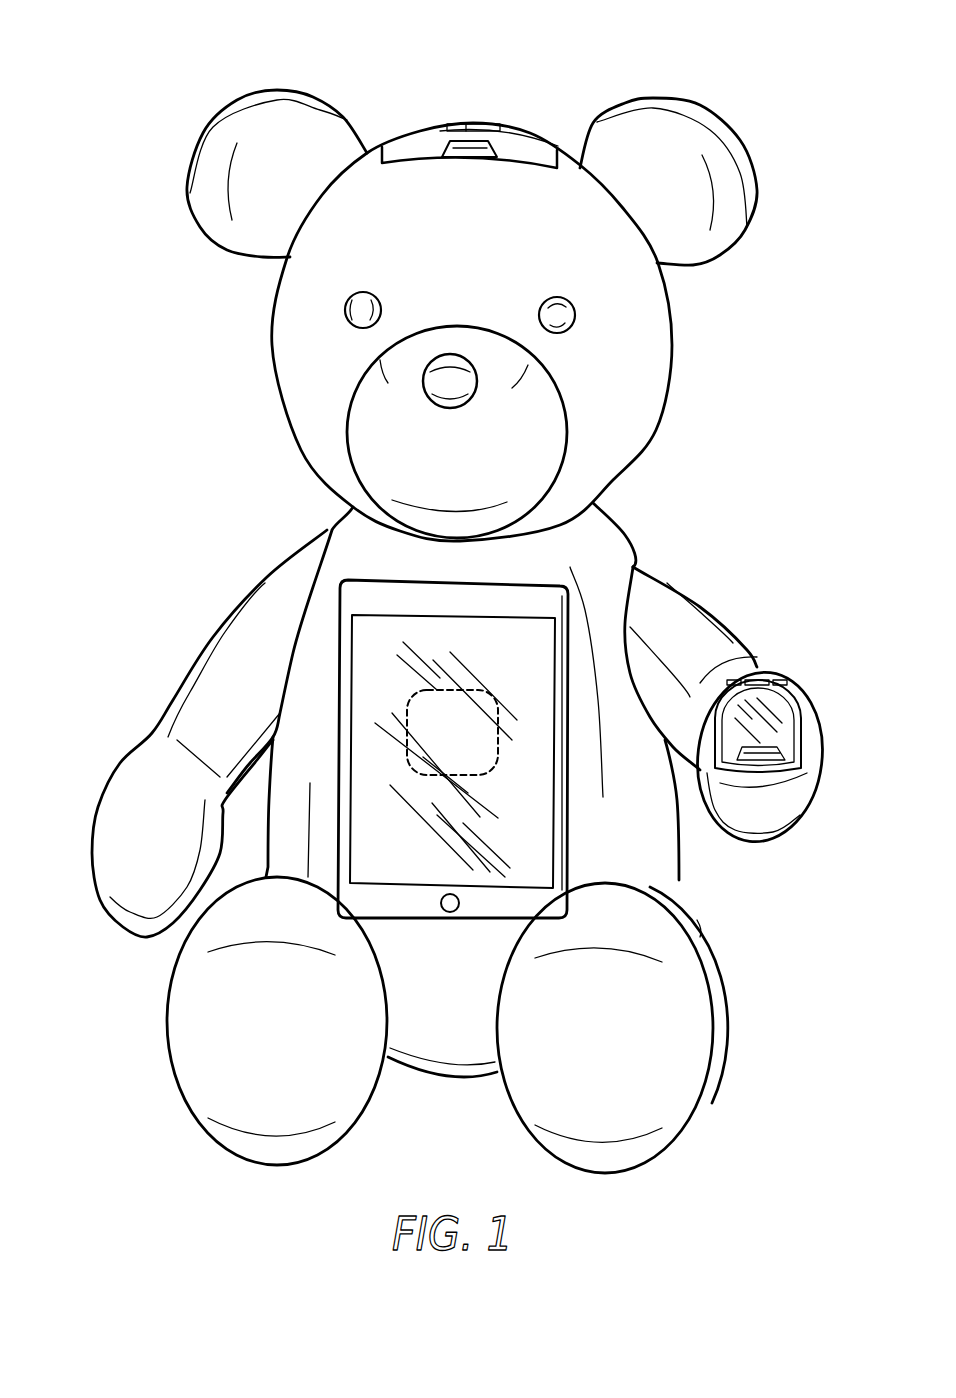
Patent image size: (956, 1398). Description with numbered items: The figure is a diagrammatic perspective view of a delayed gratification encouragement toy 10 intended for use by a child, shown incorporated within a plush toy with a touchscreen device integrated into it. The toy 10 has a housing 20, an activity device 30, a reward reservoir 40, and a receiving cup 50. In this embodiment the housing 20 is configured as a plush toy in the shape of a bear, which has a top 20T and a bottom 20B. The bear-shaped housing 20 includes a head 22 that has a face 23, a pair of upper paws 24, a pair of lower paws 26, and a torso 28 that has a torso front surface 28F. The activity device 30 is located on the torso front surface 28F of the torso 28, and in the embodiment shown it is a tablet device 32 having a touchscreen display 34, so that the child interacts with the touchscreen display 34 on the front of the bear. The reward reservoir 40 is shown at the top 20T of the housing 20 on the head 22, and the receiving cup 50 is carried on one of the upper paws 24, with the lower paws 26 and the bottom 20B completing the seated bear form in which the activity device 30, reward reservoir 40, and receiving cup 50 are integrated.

The delayed gratification encouragement toy 10 is at (128, 1056).
The housing 20 is at (610, 512).
The top 20T is at (377, 148).
The bottom 20B is at (413, 1075).
The head 22 is at (672, 372).
The face 23 is at (305, 372).
The upper paws 24 is at (783, 677).
The lower paws 26 is at (178, 997).
The torso 28 is at (628, 534).
The torso front surface 28F is at (315, 628).
The activity device 30 is at (565, 860).
The tablet device 32 is at (559, 769).
The touchscreen display 34 is at (560, 830).
The reward reservoir 40 is at (553, 140).
The receiving cup 50 is at (797, 730).